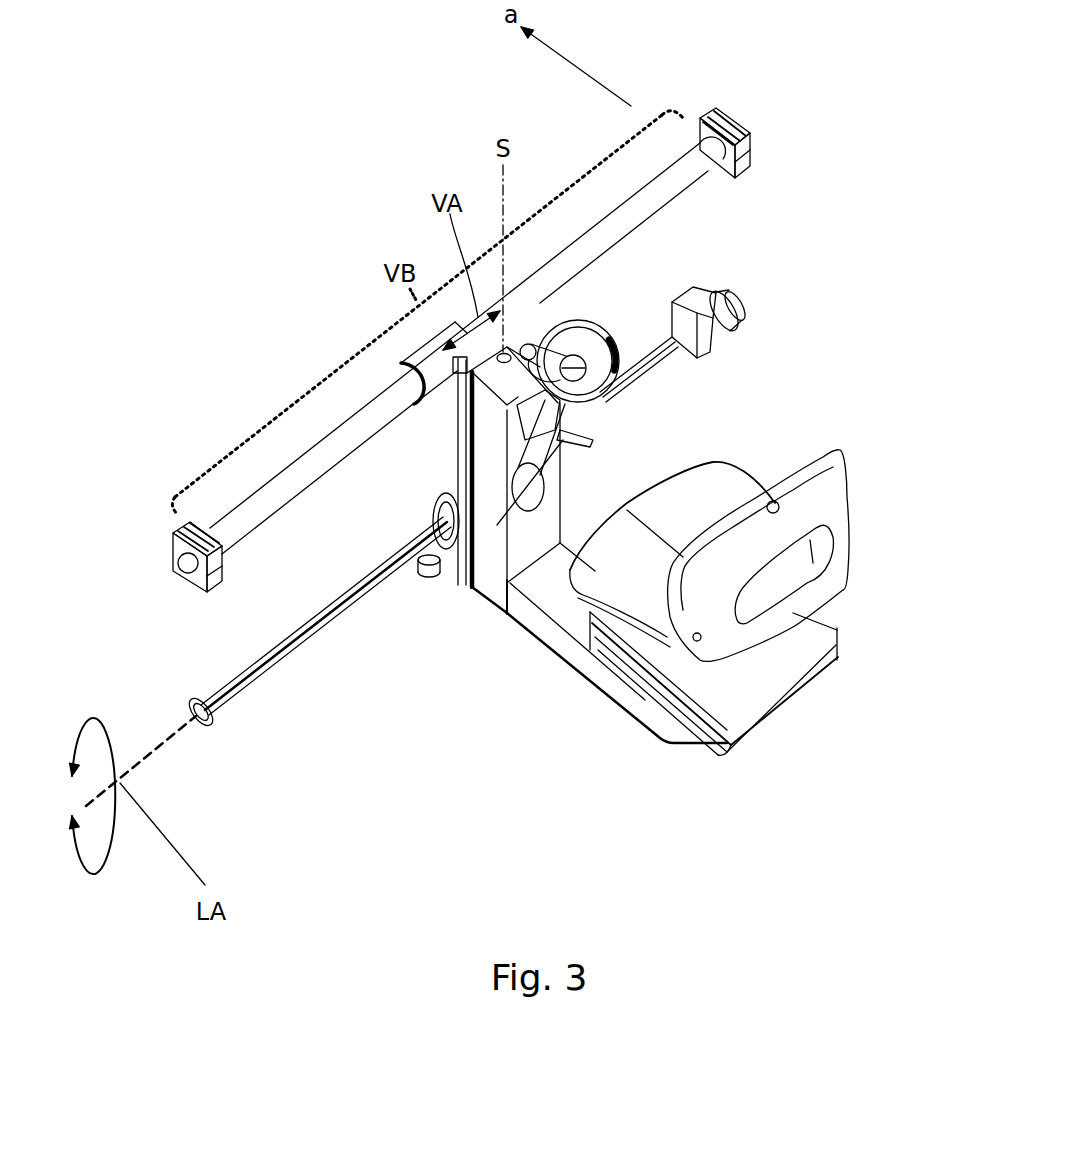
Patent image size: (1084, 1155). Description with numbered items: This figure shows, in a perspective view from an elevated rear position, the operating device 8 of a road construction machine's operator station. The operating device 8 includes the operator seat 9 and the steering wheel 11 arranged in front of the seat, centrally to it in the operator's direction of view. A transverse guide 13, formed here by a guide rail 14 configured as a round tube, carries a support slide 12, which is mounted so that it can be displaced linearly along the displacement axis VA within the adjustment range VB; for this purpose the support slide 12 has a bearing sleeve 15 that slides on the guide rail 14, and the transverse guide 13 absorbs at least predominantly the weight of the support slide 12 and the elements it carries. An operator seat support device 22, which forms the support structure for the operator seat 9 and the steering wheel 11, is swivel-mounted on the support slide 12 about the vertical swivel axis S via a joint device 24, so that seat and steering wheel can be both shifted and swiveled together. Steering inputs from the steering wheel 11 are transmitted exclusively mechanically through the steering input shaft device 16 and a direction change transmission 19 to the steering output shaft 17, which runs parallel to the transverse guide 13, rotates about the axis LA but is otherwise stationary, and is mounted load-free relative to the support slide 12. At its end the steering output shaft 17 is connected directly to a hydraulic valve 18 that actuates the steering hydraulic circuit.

The operating device 8 is at (845, 160).
The operator seat 9 is at (837, 446).
The steering wheel 11 is at (570, 318).
The support slide 12 is at (462, 428).
The transverse guide 13 is at (704, 152).
The guide rail 14 is at (380, 405).
The bearing sleeve 15 is at (401, 365).
The steering input shaft device 16 is at (470, 590).
The steering output shaft 17 is at (264, 668).
The hydraulic valve 18 is at (714, 323).
The direction change transmission 19 is at (443, 560).
The operator seat support device 22 is at (570, 640).
The joint device 24 is at (506, 352).